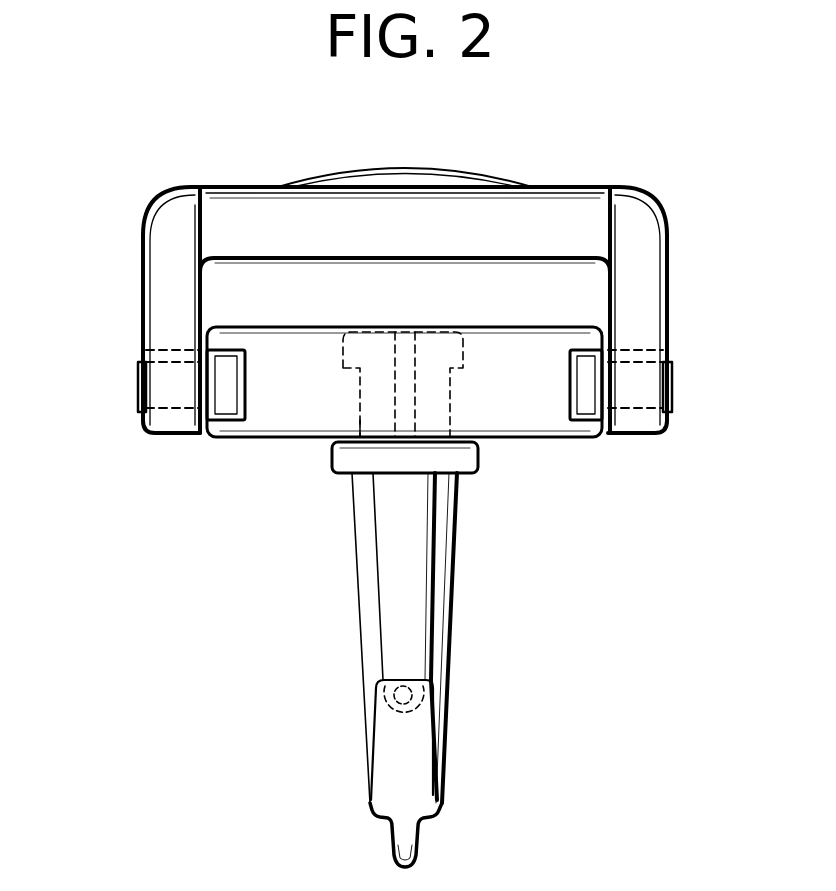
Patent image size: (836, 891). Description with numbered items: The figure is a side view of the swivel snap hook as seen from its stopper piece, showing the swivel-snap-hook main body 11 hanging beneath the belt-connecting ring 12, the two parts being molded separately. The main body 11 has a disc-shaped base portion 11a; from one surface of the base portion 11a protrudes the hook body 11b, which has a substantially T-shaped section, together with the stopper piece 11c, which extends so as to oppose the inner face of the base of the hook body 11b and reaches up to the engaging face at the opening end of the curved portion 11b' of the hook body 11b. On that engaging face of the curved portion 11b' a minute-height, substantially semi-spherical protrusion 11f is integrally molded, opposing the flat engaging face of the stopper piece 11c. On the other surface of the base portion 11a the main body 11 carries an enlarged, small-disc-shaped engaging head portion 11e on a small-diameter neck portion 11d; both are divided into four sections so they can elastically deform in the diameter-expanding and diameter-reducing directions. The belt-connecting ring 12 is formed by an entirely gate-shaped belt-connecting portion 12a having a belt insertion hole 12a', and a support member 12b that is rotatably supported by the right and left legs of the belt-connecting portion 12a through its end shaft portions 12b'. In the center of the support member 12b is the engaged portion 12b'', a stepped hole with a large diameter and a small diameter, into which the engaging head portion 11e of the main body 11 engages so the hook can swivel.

The swivel-snap-hook main body 11 is at (467, 562).
The base portion 11a is at (335, 456).
The hook body 11b is at (495, 638).
The curved portion 11b' is at (480, 773).
The stopper piece 11c is at (392, 587).
The neck portion 11d is at (363, 380).
The engaging head portion 11e is at (370, 345).
The protrusion 11f is at (397, 700).
The belt-connecting ring 12 is at (670, 223).
The belt-connecting portion 12a is at (405, 161).
The belt insertion hole 12a' is at (397, 196).
The support member 12b is at (404, 418).
The end shaft portions 12b' is at (406, 381).
The engaged portion 12b'' is at (443, 357).